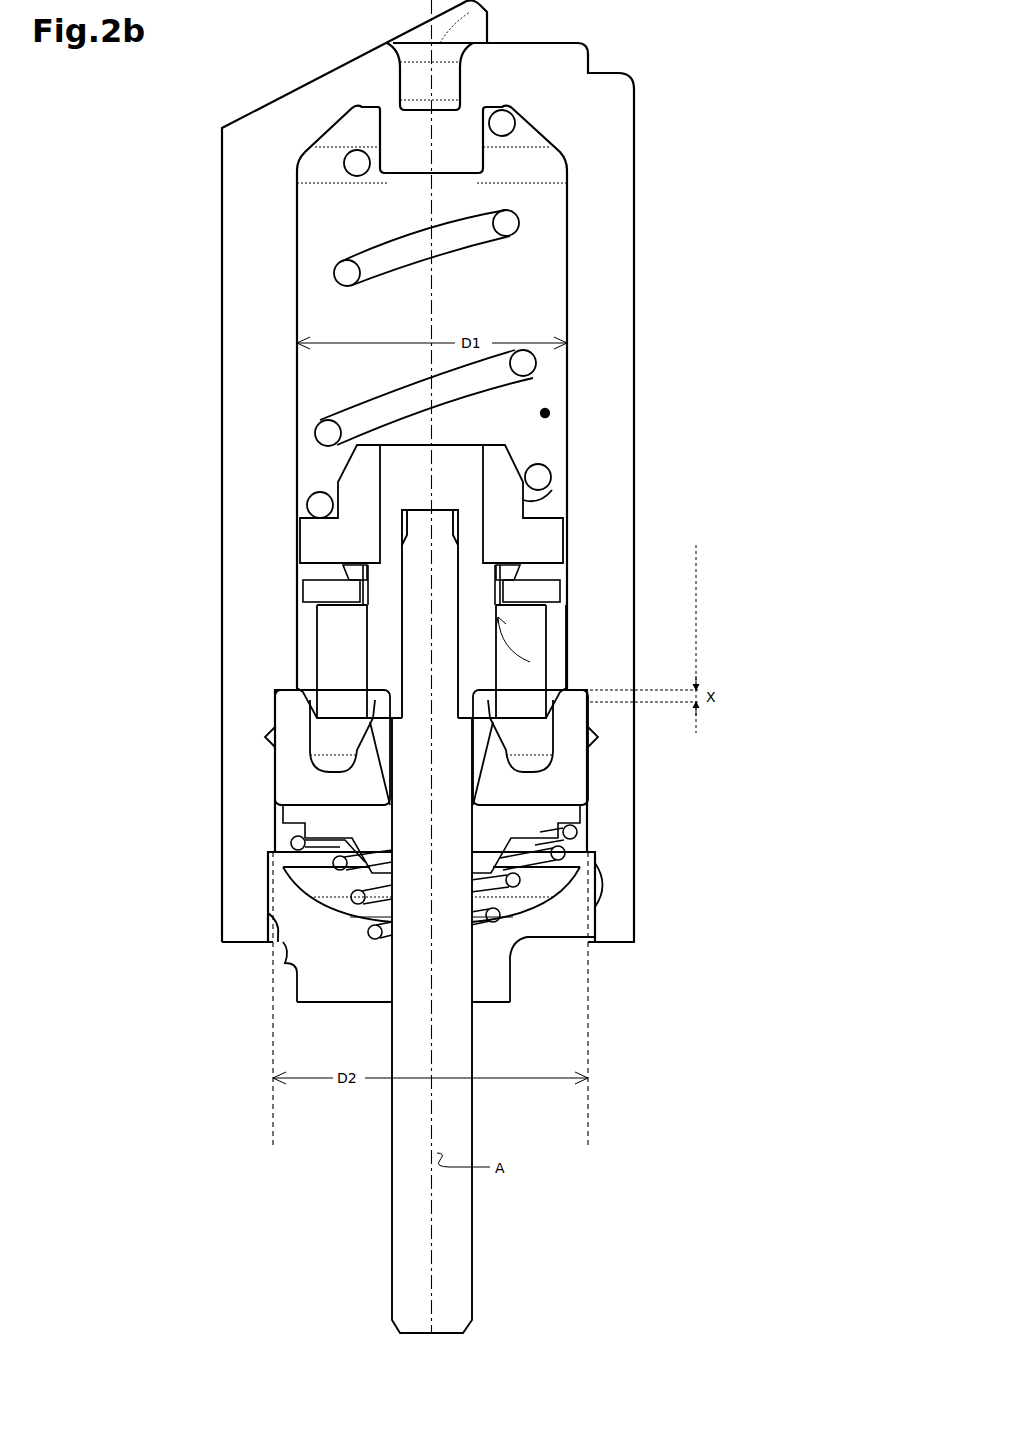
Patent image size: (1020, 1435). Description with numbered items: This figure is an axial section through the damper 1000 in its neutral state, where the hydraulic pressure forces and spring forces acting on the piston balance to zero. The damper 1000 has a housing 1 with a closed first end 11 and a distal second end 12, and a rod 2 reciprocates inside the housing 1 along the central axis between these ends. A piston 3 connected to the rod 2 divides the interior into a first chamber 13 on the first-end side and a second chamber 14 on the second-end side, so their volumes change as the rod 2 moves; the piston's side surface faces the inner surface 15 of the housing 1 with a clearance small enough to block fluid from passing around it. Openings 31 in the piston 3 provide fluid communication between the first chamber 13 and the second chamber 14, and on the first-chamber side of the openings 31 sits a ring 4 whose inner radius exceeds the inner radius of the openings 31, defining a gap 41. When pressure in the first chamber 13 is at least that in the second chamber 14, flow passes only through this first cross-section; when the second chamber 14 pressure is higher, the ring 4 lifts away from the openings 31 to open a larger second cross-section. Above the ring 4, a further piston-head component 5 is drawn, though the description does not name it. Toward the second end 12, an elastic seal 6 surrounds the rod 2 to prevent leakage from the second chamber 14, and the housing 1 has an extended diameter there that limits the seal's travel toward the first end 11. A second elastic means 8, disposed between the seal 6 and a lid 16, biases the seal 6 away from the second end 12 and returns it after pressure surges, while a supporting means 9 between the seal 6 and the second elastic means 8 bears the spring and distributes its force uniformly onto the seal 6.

The housing 1 is at (233, 153).
The damper 1000 is at (834, 136).
The first end 11 is at (410, 150).
The first chamber 13 is at (520, 301).
The inner surface 15 is at (549, 414).
The piston 5 is at (316, 541).
The ring 4 is at (307, 582).
The piston 3 is at (305, 664).
The gap 41 is at (548, 670).
The openings 31 is at (530, 708).
The second chamber 14 is at (540, 745).
The seal 6 is at (568, 788).
The supporting means 9 is at (567, 817).
The second end 12 is at (213, 860).
The second elastic means 8 is at (493, 882).
The lid 16 is at (373, 990).
The rod 2 is at (473, 1210).